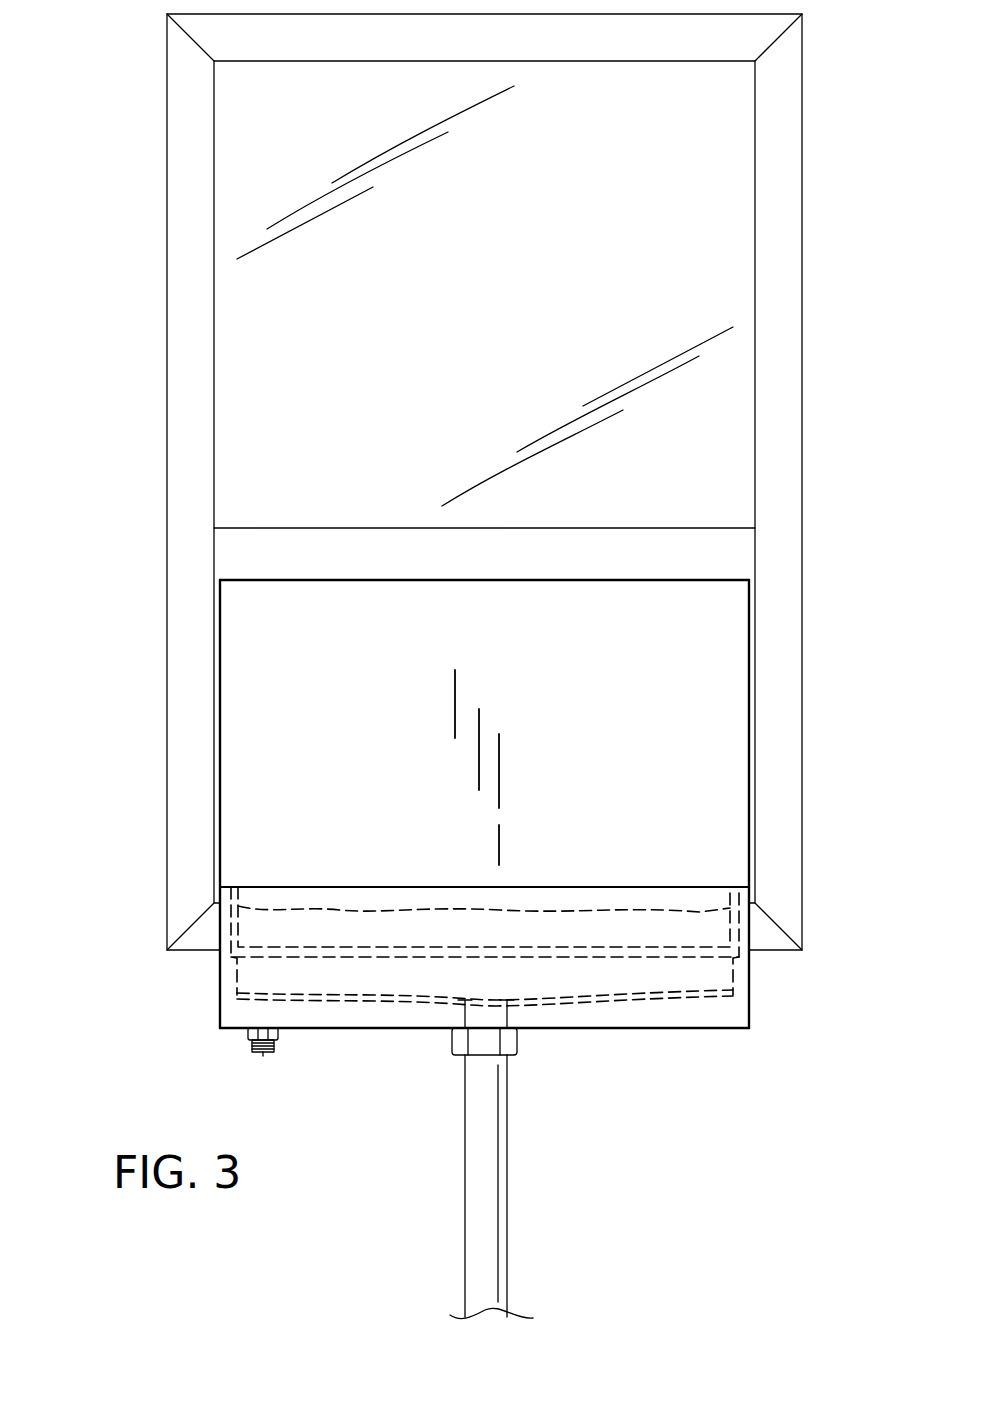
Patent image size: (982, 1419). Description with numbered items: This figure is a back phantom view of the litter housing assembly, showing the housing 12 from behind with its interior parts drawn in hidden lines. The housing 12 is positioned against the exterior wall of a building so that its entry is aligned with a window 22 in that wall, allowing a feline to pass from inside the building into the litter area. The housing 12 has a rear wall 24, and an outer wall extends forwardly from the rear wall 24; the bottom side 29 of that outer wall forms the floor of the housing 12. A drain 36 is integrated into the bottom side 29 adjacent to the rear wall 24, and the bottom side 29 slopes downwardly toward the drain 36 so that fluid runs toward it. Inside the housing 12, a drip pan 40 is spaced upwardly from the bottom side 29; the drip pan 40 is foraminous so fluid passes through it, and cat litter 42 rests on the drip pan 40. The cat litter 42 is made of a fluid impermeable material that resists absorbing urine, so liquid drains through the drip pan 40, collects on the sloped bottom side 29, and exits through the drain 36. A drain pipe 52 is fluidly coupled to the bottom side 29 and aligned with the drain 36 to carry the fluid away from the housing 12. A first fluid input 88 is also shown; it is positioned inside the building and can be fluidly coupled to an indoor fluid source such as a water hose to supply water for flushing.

The housing 12 is at (220, 580).
The window 22 is at (167, 407).
The rear wall 24 is at (255, 703).
The bottom side 29 is at (352, 1028).
The drain 36 is at (507, 1017).
The drip pan 40 is at (231, 937).
The cat litter 42 is at (700, 910).
The drain pipe 52 is at (465, 1198).
The first fluid input 88 is at (257, 1057).